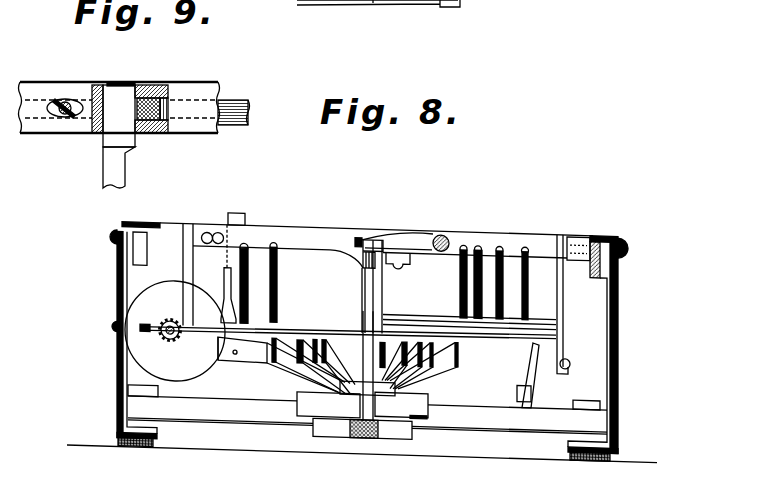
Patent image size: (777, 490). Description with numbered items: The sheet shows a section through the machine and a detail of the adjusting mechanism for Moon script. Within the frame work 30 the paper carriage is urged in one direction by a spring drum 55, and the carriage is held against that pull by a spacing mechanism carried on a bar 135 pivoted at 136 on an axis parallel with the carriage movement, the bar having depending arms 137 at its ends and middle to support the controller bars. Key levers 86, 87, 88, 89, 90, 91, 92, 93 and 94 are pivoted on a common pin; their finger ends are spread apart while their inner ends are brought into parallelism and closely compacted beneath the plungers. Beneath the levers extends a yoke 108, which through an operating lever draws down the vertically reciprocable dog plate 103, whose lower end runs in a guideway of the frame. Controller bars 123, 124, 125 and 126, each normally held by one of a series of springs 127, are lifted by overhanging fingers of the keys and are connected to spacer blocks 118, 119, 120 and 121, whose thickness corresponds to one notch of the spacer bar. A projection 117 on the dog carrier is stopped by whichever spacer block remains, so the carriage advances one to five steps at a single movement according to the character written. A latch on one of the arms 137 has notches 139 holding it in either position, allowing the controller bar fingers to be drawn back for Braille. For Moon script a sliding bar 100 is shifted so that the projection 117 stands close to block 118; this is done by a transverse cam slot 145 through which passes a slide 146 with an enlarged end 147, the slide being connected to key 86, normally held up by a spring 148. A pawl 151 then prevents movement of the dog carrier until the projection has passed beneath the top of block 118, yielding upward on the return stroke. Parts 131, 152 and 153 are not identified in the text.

In FIG. 8, the frame work 30 is at (117, 296).
In FIG. 8, the spring drum 55 is at (175, 330).
In FIG. 8, the key lever 86 is at (240, 353).
In FIG. 8, the key lever 87 is at (268, 352).
In FIG. 8, the key lever 88 is at (297, 358).
In FIG. 8, the key lever 89 is at (303, 353).
In FIG. 8, the key lever 90 is at (328, 405).
In FIG. 8, the key lever 91 is at (401, 405).
In FIG. 8, the key lever 92 is at (411, 407).
In FIG. 8, the key lever 93 is at (407, 368).
In FIG. 8, the key lever 94 is at (423, 355).
In FIG. 9, the sliding bar 100 is at (243, 105).
In FIG. 8, the dog plate 103 is at (360, 391).
In FIG. 8, the yoke 108 is at (428, 403).
In FIG. 8, the projection 117 is at (359, 219).
In FIG. 8, the spacer block 118 is at (365, 244).
In FIG. 8, the spacer block 119 is at (370, 247).
In FIG. 8, the spacer block 120 is at (377, 251).
In FIG. 8, the spacer block 121 is at (383, 272).
In FIG. 8, the controller bar 123 is at (212, 356).
In FIG. 8, the controller bar 124 is at (322, 313).
In FIG. 8, the controller bar 125 is at (435, 307).
In FIG. 8, the controller bar 126 is at (537, 302).
In FIG. 8, the spring 127 is at (480, 236).
In FIG. 8, the lever 131 is at (533, 367).
In FIG. 9, the bar 135 is at (203, 90).
In FIG. 8, the bar 135 is at (293, 221).
In FIG. 8, the pivot 136 is at (110, 233).
In FIG. 8, the depending arm 137 is at (186, 272).
In FIG. 8, the notch 139 is at (570, 353).
In FIG. 9, the cam slot 145 is at (147, 87).
In FIG. 9, the slide 146 is at (117, 168).
In FIG. 8, the slide 146 is at (232, 256).
In FIG. 9, the enlarged end 147 is at (123, 93).
In FIG. 8, the enlarged end 147 is at (245, 208).
In FIG. 8, the spring 148 is at (240, 273).
In FIG. 8, the pawl 151 is at (407, 225).
In FIG. 8, the bar end 152 is at (382, 11).
In FIG. 8, the bar 153 is at (373, 1).